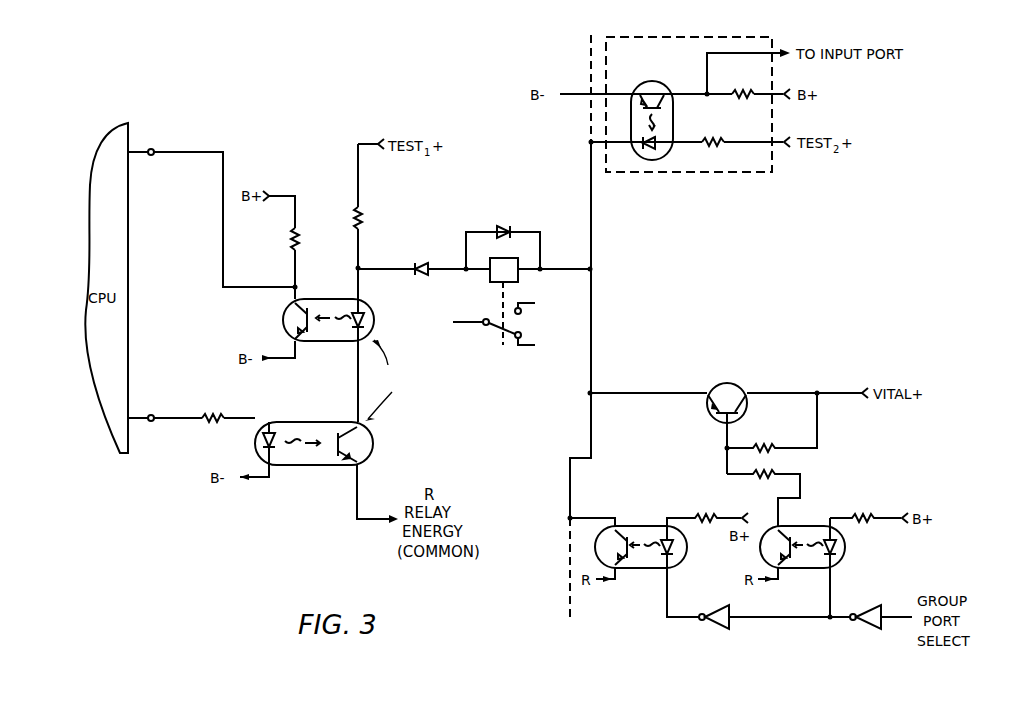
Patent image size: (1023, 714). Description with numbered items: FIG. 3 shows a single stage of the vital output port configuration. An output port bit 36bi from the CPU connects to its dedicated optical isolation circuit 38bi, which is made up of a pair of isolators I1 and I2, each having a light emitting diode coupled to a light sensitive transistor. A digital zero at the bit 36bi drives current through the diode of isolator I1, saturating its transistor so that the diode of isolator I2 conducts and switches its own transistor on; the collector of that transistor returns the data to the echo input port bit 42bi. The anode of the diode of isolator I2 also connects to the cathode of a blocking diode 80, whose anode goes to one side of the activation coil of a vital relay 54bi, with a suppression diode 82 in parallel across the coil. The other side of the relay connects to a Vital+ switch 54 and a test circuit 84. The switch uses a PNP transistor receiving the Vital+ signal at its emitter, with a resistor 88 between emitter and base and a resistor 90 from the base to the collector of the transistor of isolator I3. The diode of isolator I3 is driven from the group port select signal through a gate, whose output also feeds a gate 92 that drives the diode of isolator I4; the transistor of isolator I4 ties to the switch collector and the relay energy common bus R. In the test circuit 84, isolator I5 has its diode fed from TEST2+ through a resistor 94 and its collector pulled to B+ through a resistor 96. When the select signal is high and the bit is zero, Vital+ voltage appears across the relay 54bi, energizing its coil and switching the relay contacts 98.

The echo input port bit 42bi is at (153, 150).
The output port bit 36bi is at (158, 409).
The optical isolation circuit 38bi is at (388, 380).
The isolator I1 is at (319, 422).
The isolator I2 is at (336, 299).
The isolator circuit I3 is at (812, 526).
The optical isolating circuit I4 is at (641, 526).
The optical isolator circuit I5 is at (647, 160).
The blocking diode 80 is at (421, 262).
The suppression diode 82 is at (503, 226).
The vital relay 54bi is at (518, 258).
The relay contacts 98 is at (517, 327).
The test circuit 84 is at (708, 172).
The resistor 96 is at (744, 92).
The resistor 94 is at (712, 141).
The Vital+ switch 54 is at (783, 382).
The resistor 88 is at (765, 446).
The resistor 90 is at (756, 479).
The gate 92 is at (718, 607).